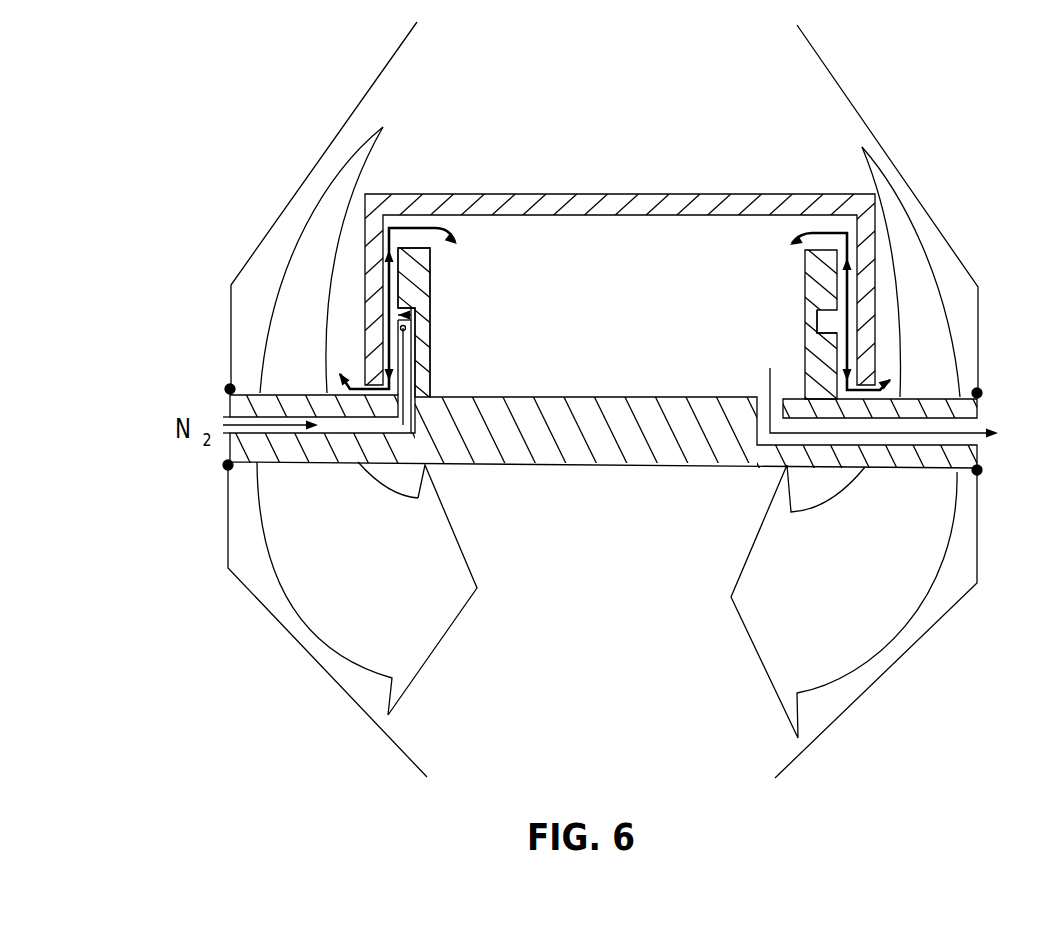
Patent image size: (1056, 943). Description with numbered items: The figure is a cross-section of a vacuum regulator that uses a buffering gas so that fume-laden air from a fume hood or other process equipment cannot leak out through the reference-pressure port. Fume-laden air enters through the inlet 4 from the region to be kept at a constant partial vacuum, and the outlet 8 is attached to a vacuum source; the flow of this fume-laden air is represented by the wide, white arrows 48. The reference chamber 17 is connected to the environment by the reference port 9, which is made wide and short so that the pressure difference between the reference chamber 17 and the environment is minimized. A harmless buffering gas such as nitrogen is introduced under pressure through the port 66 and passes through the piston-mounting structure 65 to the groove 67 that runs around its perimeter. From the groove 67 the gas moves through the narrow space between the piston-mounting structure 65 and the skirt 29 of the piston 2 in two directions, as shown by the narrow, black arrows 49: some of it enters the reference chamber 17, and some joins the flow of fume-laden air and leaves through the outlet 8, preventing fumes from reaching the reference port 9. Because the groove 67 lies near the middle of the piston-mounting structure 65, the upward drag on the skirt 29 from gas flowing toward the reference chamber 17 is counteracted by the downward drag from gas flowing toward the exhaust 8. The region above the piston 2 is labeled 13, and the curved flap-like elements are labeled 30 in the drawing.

The piston 2 is at (710, 193).
The inlet 4 is at (797, 25).
The outlet 8 is at (775, 778).
The reference port 9 is at (981, 418).
The upper chamber region 13 is at (609, 93).
The reference chamber 17 is at (634, 335).
The skirt 29 is at (373, 258).
The upper flap 30 is at (373, 170).
The wide, white arrows 48 is at (285, 608).
The narrow, black arrows 49 is at (450, 233).
The piston-mounting structure 65 is at (430, 368).
The port 66 is at (230, 437).
The groove 67 is at (418, 316).